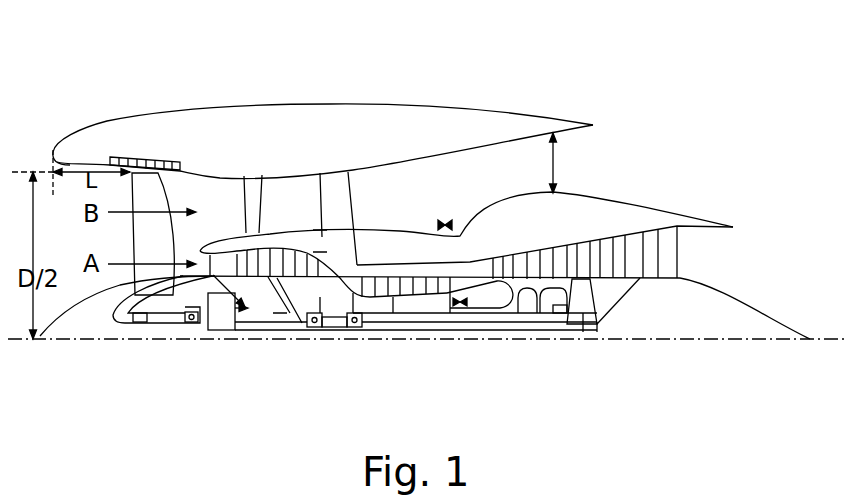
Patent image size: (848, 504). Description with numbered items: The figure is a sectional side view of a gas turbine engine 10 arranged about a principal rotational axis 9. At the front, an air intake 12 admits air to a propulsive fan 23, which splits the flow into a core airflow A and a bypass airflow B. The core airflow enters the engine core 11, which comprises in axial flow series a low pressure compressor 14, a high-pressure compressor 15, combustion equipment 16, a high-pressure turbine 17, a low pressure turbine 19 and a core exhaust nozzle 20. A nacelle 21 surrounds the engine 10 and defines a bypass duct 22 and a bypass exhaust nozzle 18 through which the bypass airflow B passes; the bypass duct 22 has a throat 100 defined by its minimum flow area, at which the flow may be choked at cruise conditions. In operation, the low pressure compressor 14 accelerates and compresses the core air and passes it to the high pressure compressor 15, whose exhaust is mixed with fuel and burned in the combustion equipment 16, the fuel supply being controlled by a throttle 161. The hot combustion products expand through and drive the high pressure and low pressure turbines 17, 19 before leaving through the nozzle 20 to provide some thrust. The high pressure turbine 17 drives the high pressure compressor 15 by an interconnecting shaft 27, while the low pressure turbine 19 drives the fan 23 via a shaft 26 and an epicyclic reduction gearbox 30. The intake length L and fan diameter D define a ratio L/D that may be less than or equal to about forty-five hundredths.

The principal rotational axis 9 is at (708, 342).
The gas turbine engine 10 is at (100, 116).
The core 11 is at (463, 242).
The air intake 12 is at (62, 147).
The low pressure compressor 14 is at (282, 260).
The high pressure compressor 15 is at (408, 283).
The combustion equipment 16 is at (473, 287).
The high-pressure turbine 17 is at (535, 262).
The bypass exhaust nozzle 18 is at (692, 121).
The low pressure turbine 19 is at (655, 267).
The core exhaust nozzle 20 is at (732, 258).
The nacelle 21 is at (333, 120).
The bypass duct 22 is at (452, 190).
The propulsive fan 23 is at (137, 250).
The shaft 26 is at (380, 333).
The interconnecting shaft 27 is at (448, 312).
The epicyclic gearbox 30 is at (222, 330).
The throat 100 is at (555, 163).
The throttle 161 is at (457, 308).